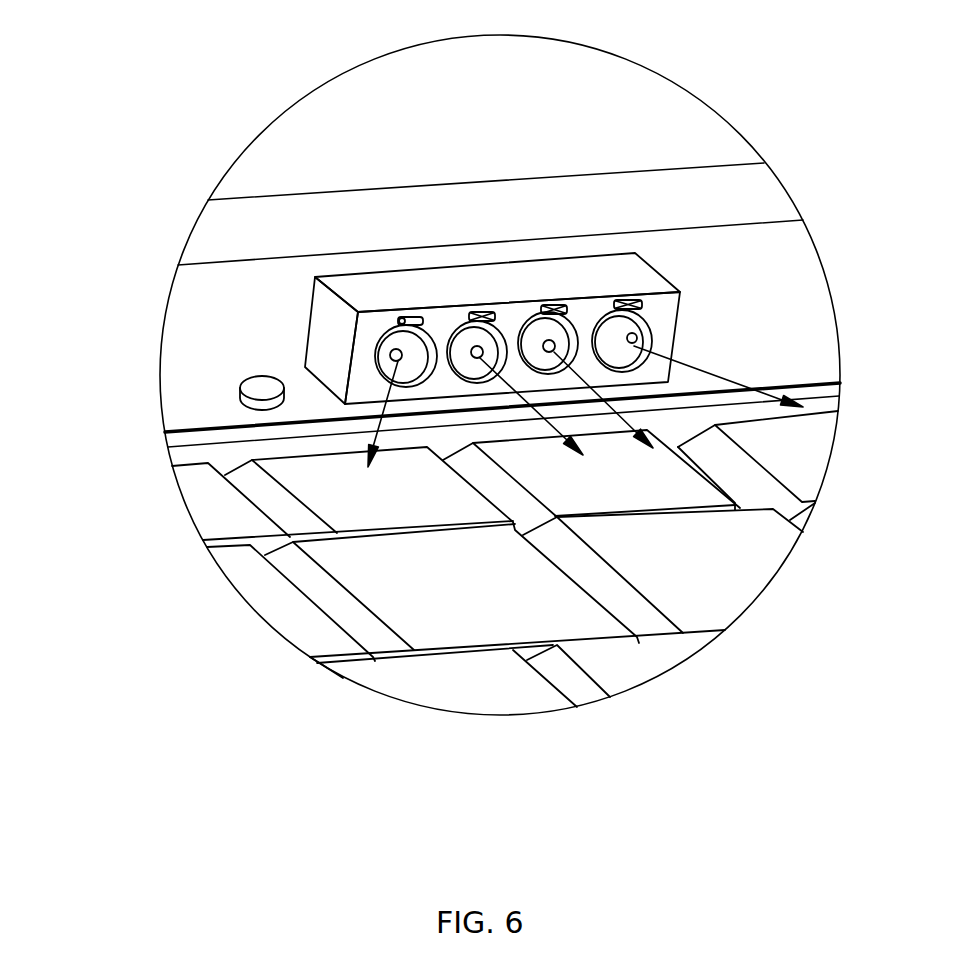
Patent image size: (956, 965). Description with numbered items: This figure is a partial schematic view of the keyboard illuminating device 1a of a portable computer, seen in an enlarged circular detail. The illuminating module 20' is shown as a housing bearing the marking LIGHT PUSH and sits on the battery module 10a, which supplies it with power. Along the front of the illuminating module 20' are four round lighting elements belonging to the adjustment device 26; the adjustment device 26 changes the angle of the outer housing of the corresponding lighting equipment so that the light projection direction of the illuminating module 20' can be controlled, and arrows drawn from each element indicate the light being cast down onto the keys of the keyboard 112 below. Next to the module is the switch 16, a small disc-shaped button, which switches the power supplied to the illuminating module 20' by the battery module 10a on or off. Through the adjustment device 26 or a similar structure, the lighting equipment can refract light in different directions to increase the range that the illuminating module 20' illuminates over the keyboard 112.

The keyboard illuminating device 1a is at (352, 113).
The battery module 10a is at (812, 305).
The illuminating module 20' is at (352, 328).
The adjustment device 26 is at (563, 305).
The switch 16 is at (243, 388).
The keyboard 112 is at (252, 582).